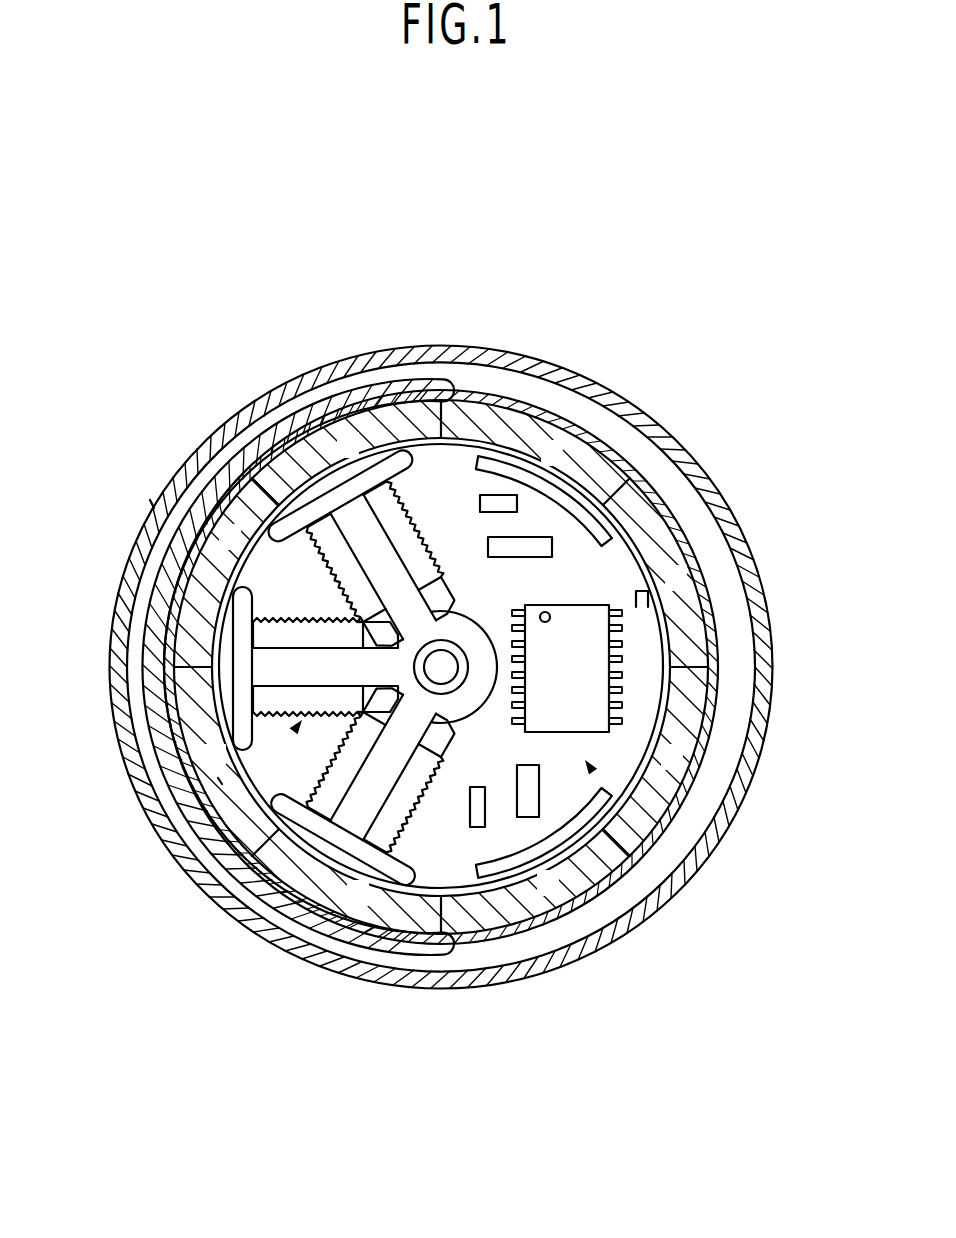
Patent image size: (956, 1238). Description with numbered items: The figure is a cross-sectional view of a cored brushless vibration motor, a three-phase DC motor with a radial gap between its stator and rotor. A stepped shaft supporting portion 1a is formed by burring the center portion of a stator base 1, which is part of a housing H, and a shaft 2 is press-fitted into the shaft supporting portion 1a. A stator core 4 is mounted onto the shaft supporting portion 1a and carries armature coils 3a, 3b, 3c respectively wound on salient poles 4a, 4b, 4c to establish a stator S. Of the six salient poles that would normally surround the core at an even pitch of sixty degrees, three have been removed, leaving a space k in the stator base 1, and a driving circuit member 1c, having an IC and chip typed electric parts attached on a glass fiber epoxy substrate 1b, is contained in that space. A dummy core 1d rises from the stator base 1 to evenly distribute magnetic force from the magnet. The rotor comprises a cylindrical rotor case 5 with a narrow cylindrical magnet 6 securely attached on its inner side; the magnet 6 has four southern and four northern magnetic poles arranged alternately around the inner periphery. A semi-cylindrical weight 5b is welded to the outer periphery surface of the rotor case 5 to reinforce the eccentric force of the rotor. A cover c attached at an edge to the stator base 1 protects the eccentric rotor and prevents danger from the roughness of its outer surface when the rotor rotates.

The stator base 1 is at (645, 775).
The shaft supporting portion 1a is at (470, 666).
The glass fiber epoxy substrate 1b is at (633, 623).
The driving circuit member 1c is at (578, 606).
The dummy core 1d is at (522, 462).
The shaft 2 is at (448, 680).
The armature coil 3a is at (422, 515).
The armature coil 3b is at (270, 636).
The armature coil 3c is at (416, 765).
The stator core 4 is at (449, 713).
The salient pole 4a is at (352, 512).
The salient pole 4b is at (268, 660).
The salient pole 4c is at (360, 805).
The rotor case 5 is at (583, 440).
The semi-cylindrical weight 5b is at (203, 470).
The cylindrical magnet 6 is at (300, 722).
The cover c is at (640, 412).
The housing H is at (152, 506).
The stator S is at (220, 783).
The space k is at (590, 767).